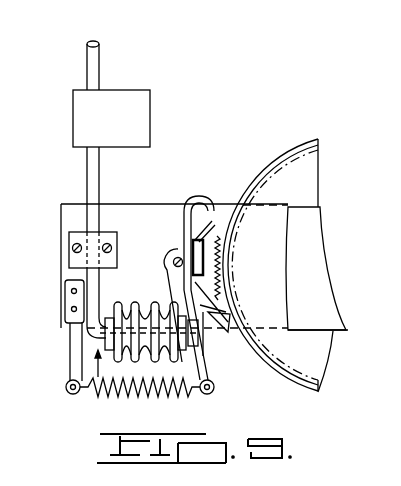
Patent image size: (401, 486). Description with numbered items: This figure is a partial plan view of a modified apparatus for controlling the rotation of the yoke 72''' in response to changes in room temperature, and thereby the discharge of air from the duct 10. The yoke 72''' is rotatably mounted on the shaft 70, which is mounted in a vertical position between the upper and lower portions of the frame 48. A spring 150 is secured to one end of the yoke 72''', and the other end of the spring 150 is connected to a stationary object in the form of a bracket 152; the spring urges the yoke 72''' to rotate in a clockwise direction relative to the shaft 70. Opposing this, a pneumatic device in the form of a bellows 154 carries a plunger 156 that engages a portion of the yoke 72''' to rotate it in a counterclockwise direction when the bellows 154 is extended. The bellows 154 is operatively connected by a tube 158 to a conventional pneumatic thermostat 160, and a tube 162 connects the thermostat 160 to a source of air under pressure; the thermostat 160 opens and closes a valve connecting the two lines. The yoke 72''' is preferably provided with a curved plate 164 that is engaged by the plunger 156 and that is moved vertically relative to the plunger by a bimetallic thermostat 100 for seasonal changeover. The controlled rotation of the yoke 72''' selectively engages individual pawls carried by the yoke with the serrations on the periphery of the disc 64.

The tube 162 is at (96, 62).
The pneumatic thermostat 160 is at (150, 118).
The tube 158 is at (100, 175).
The yoke 72''' is at (173, 288).
The shaft 70 is at (170, 266).
The bellows 154 is at (136, 308).
The bimetallic thermostat 100 is at (204, 256).
The frame 48 is at (346, 329).
The duct 10 is at (236, 338).
The curved plate 164 is at (199, 358).
The plunger 156 is at (213, 383).
The disc 64 is at (298, 385).
The bracket 152 is at (70, 353).
The spring 150 is at (118, 395).